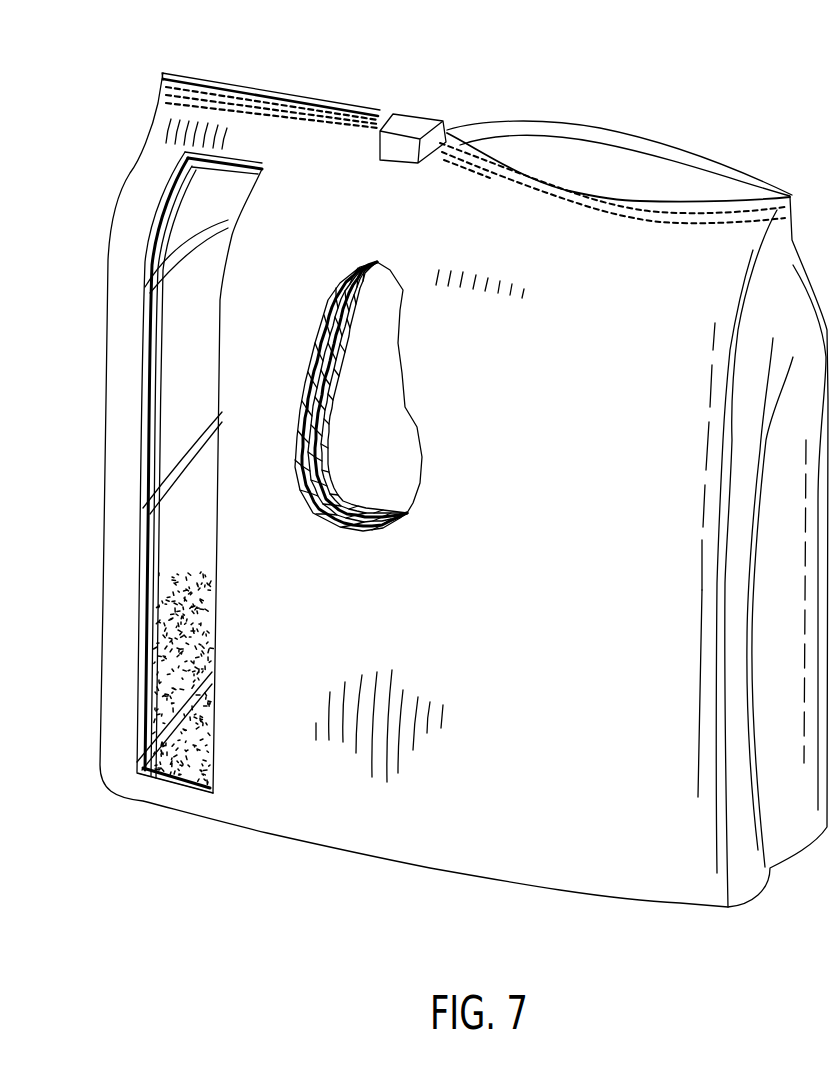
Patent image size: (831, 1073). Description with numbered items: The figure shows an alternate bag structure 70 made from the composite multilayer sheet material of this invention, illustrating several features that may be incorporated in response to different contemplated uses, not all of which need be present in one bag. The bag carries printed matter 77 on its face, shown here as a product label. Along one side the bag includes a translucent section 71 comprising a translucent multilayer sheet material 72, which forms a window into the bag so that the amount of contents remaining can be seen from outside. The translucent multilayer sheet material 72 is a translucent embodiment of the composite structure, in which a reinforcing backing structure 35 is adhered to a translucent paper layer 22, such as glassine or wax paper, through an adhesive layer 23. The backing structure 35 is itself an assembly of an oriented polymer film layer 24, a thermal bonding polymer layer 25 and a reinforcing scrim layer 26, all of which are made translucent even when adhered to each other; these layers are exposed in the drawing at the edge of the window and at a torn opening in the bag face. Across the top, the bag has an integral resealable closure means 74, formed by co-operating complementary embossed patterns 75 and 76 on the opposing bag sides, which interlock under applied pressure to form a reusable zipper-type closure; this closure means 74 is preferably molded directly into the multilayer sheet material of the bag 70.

The bag structure 70 is at (590, 87).
The resealable closure means 74 is at (291, 98).
The embossed pattern 75 is at (670, 152).
The embossed pattern 76 is at (630, 222).
The translucent multilayer sheet material 72 is at (140, 372).
The reinforcing backing structure 35 is at (62, 408).
The oriented polymer film layer 24 is at (157, 418).
The thermal bonding polymer layer 25 is at (155, 445).
The reinforcing scrim layer 26 is at (148, 468).
The paper layer 22 is at (315, 345).
The adhesive layer 23 is at (310, 395).
The translucent section 71 is at (204, 566).
The printed matter 77 is at (492, 444).